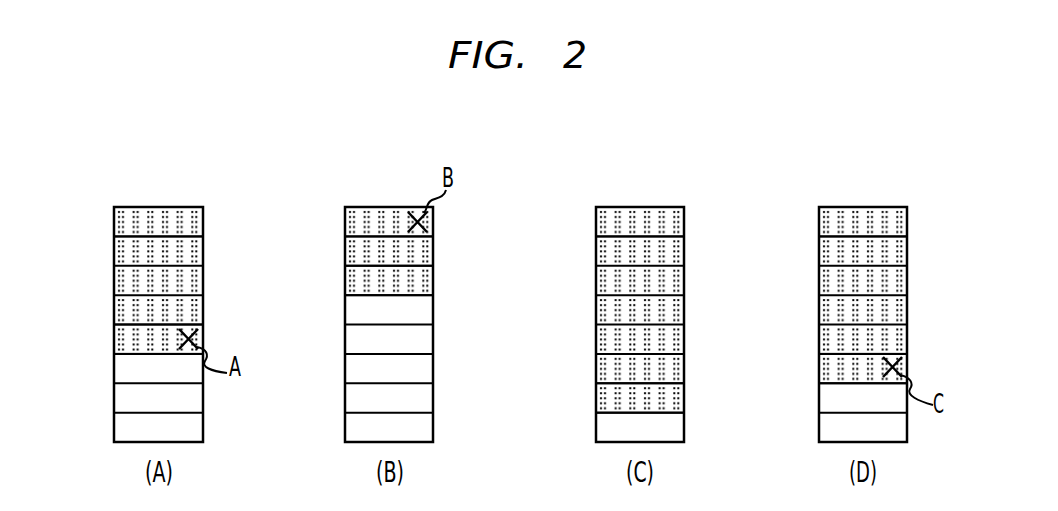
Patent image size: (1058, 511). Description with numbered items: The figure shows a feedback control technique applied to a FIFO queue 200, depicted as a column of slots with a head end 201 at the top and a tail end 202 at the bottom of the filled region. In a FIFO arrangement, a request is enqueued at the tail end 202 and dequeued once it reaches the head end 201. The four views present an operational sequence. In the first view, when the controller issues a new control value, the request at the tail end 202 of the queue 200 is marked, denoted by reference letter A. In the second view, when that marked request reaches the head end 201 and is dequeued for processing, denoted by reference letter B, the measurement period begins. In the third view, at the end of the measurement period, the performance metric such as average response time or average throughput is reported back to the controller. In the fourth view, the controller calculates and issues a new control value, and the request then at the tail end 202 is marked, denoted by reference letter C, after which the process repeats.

In FIG. 2A, the queue 200 is at (125, 183).
In FIG. 2B, the queue 200 is at (356, 184).
In FIG. 2C, the queue 200 is at (608, 184).
In FIG. 2D, the queue 200 is at (830, 184).
In FIG. 2A, the head end 201 is at (216, 222).
In FIG. 2B, the head end 201 is at (447, 222).
In FIG. 2C, the head end 201 is at (584, 222).
In FIG. 2D, the head end 201 is at (806, 222).
In FIG. 2A, the tail end 202 is at (216, 339).
In FIG. 2B, the tail end 202 is at (447, 281).
In FIG. 2C, the tail end 202 is at (584, 397).
In FIG. 2D, the tail end 202 is at (806, 367).